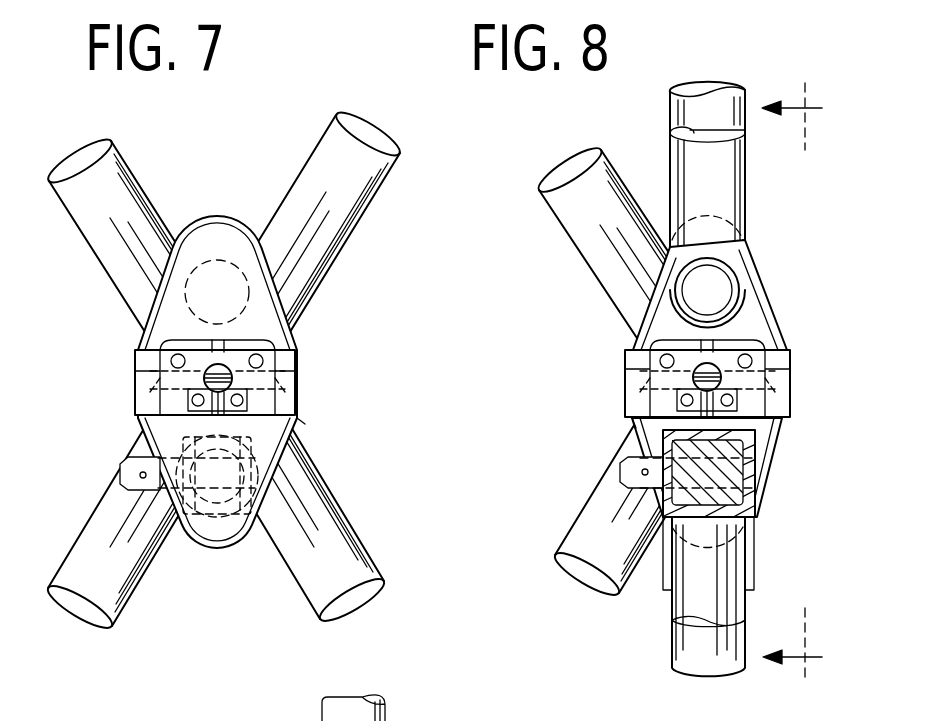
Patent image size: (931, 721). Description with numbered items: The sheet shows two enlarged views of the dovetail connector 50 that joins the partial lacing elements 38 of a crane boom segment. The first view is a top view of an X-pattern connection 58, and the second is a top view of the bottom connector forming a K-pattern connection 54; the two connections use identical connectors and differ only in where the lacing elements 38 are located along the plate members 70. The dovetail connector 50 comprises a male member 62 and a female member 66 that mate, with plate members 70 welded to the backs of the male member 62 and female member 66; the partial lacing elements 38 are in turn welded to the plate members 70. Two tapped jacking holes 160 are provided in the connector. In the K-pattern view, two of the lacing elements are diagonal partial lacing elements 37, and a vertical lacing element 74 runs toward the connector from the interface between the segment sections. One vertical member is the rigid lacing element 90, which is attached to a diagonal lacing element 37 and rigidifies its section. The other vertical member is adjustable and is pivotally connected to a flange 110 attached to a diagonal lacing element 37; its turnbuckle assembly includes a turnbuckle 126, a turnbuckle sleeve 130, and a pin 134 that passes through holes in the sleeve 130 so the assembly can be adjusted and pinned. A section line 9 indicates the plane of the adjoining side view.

In FIG. 8, the section line 9- 9 is at (795, 379).
In FIG. 8, the diagonal partial lacing element 37 is at (741, 197).
In FIG. 7, the partial lacing element 38 is at (87, 247).
In FIG. 8, the partial lacing element 38 is at (742, 92).
In FIG. 7, the dovetail connector 50 is at (318, 320).
In FIG. 8, the dovetail connector 50 is at (783, 292).
In FIG. 8, the K-pattern connection 54 is at (631, 421).
In FIG. 7, the X-pattern connection 58 is at (300, 425).
In FIG. 7, the male member 62 is at (297, 362).
In FIG. 8, the male member 62 is at (790, 350).
In FIG. 7, the female member 66 is at (297, 400).
In FIG. 8, the female member 66 is at (790, 390).
In FIG. 7, the plate member 70 is at (232, 217).
In FIG. 8, the plate member 70 is at (762, 257).
In FIG. 7, the vertical lacing element 74 is at (372, 708).
In FIG. 7, the rigid lacing element 90 is at (226, 263).
In FIG. 8, the rigid lacing element 90 is at (703, 258).
In FIG. 8, the flange 110 is at (748, 558).
In FIG. 7, the turnbuckle 126 is at (208, 476).
In FIG. 8, the turnbuckle 126 is at (725, 480).
In FIG. 8, the turnbuckle sleeve 130 is at (760, 431).
In FIG. 7, the pin 134 is at (140, 473).
In FIG. 8, the pin 134 is at (642, 472).
In FIG. 7, the tapped jacking hole 160 is at (171, 359).
In FIG. 8, the tapped jacking hole 160 is at (660, 361).